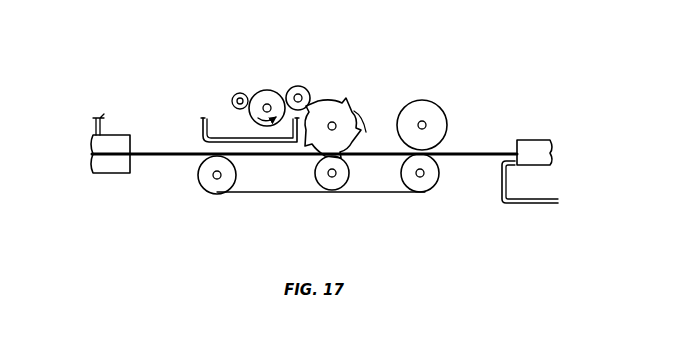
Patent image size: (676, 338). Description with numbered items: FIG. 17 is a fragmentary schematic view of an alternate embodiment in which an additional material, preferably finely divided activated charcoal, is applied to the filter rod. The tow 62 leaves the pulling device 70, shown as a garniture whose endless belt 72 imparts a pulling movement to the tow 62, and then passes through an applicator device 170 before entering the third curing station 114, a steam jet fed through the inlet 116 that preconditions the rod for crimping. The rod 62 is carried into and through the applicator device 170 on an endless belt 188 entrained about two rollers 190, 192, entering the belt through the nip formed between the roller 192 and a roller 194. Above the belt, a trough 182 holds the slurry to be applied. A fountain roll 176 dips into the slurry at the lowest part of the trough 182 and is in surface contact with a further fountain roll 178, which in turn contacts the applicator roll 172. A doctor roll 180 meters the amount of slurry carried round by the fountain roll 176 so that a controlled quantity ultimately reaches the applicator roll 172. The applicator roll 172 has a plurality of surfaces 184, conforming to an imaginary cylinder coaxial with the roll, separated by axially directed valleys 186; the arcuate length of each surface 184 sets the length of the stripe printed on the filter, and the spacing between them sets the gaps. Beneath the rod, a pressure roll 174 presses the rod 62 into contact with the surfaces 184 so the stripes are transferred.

The tow 62 is at (488, 156).
The pulling device 70 is at (515, 137).
The endless belt 72 is at (536, 207).
The third curing station 114 is at (123, 132).
The inlet 116 is at (94, 119).
The applicator device 170 is at (318, 67).
The applicator roll 172 is at (332, 101).
The pressure roll 174 is at (316, 173).
The fountain roll 176 is at (267, 92).
The further fountain roll 178 is at (295, 86).
The doctor roll 180 is at (233, 100).
The trough 182 is at (203, 128).
The surfaces 184 is at (350, 104).
The axially directed valleys 186 is at (375, 130).
The endless belt 188 is at (335, 196).
The roller 190 is at (223, 183).
The roller 192 is at (430, 191).
The roller 194 is at (405, 110).